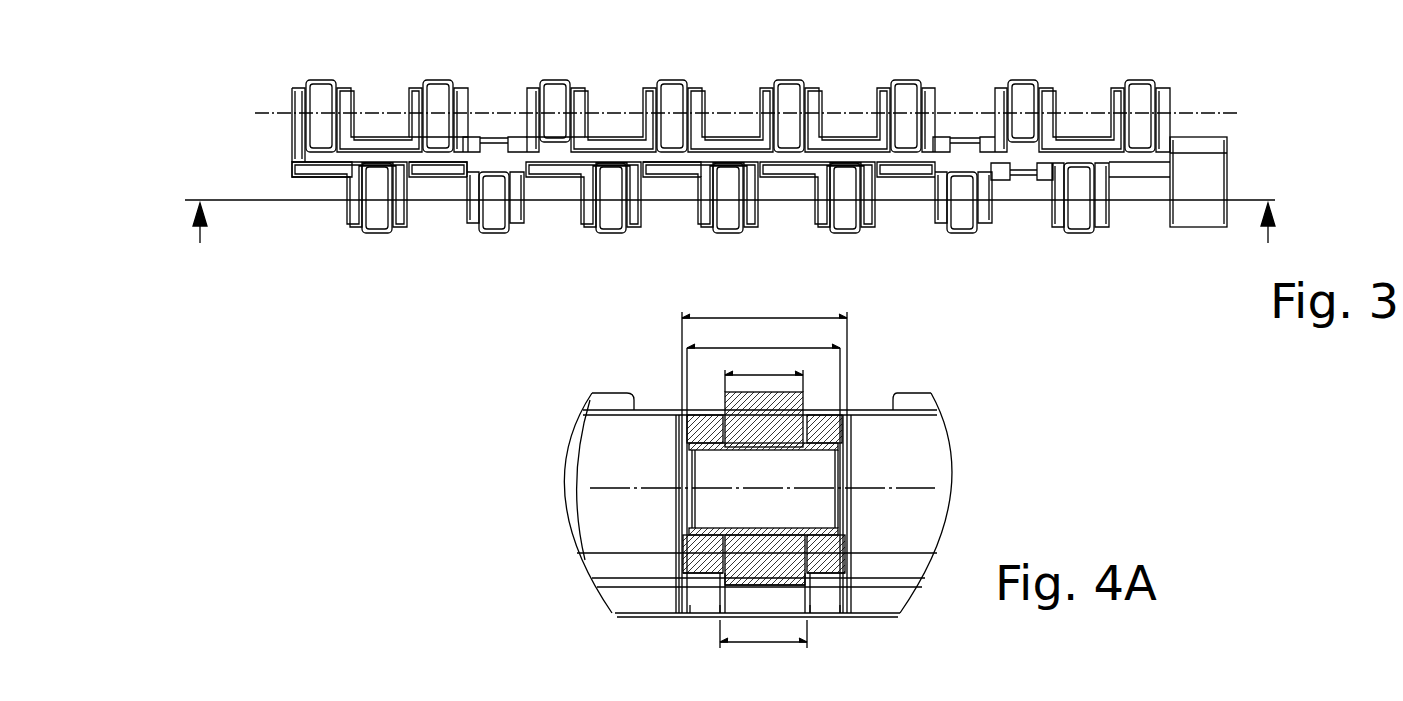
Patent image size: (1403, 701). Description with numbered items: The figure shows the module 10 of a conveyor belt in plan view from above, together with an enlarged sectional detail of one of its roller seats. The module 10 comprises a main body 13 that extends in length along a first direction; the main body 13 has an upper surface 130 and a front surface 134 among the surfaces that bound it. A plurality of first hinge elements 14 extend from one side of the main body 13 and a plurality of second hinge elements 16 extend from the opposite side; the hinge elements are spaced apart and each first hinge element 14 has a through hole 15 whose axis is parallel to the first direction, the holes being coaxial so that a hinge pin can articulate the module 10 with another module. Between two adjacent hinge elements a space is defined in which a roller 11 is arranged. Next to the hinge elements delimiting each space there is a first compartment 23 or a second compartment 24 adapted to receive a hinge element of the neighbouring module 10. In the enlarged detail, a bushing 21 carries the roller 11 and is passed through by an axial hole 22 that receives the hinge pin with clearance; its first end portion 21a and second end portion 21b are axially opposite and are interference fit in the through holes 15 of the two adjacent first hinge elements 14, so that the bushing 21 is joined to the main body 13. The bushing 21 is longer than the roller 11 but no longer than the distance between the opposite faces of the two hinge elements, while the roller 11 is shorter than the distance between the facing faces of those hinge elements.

In FIG. 3, the module 10 is at (1278, 123).
In FIG. 3, the roller 11 is at (435, 66).
In FIG. 4A, the roller 11 is at (737, 418).
In FIG. 3, the main body 13 is at (1198, 132).
In FIG. 4A, the main body 13 is at (938, 406).
In FIG. 3, the first hinge elements 14 is at (635, 222).
In FIG. 4A, the first hinge elements 14 is at (697, 555).
In FIG. 4A, the through hole 15 is at (685, 522).
In FIG. 3, the second hinge elements 16 is at (341, 86).
In FIG. 4A, the bushing 21 is at (821, 432).
In FIG. 4A, the first end portion 21a is at (826, 534).
In FIG. 4A, the second end portion 21b is at (713, 445).
In FIG. 4A, the axial hole 22 is at (782, 452).
In FIG. 3, the first compartment 23 is at (673, 210).
In FIG. 3, the second compartment 24 is at (517, 107).
In FIG. 3, the upper surface 130 is at (298, 150).
In FIG. 3, the front surface 134 is at (437, 167).
In FIG. 4A, the front surface 134 is at (592, 455).